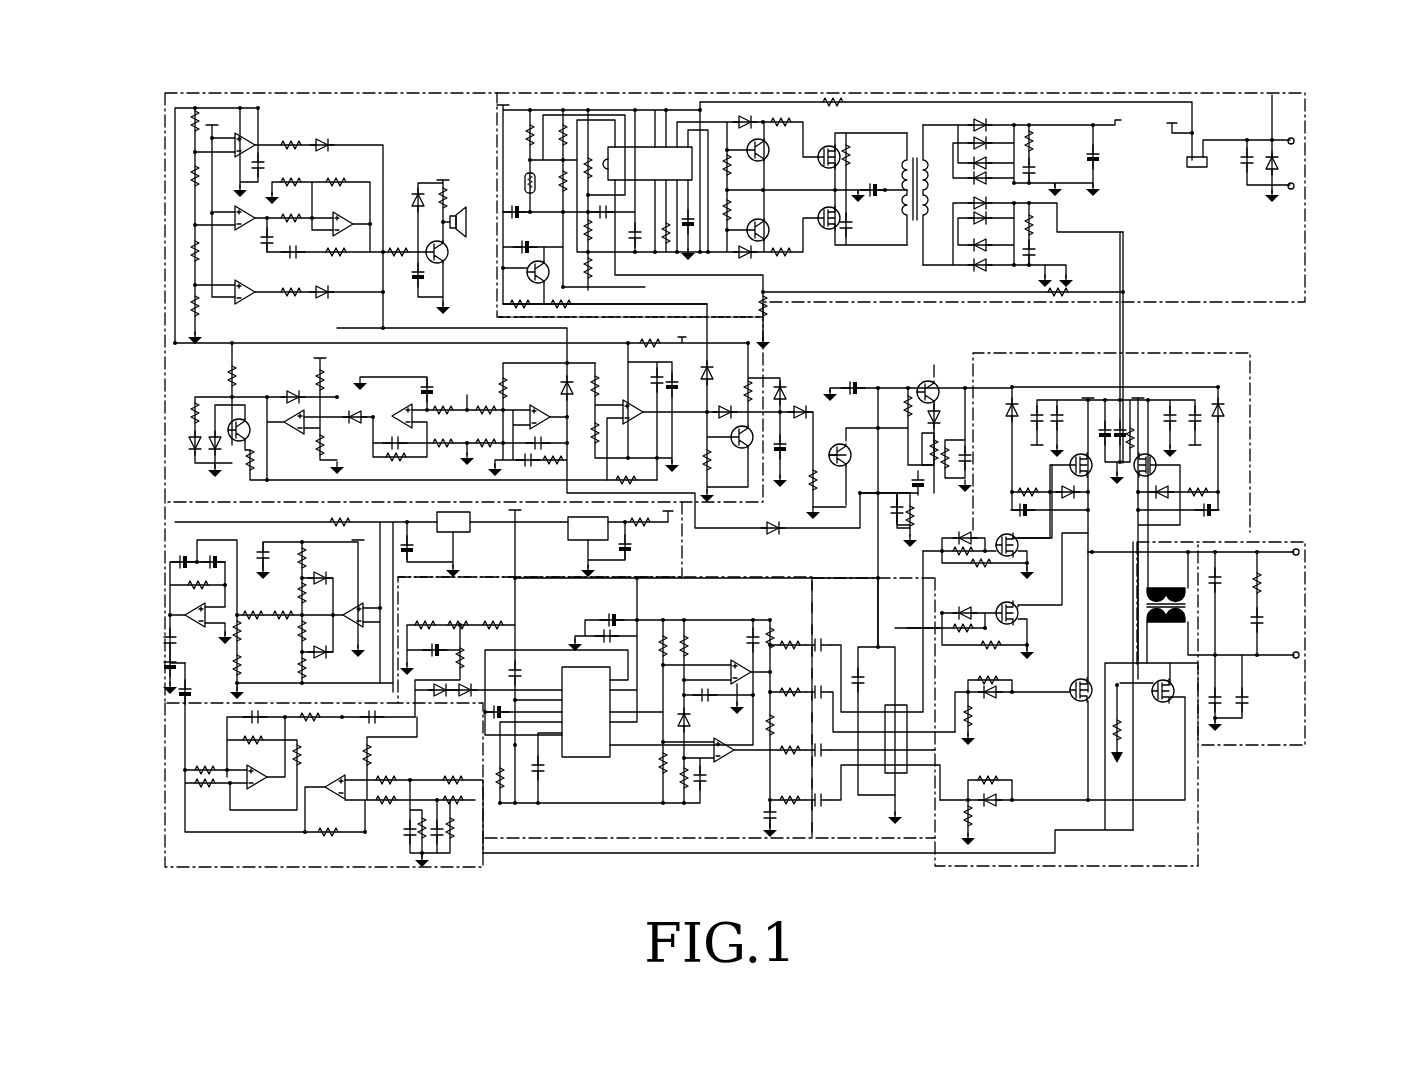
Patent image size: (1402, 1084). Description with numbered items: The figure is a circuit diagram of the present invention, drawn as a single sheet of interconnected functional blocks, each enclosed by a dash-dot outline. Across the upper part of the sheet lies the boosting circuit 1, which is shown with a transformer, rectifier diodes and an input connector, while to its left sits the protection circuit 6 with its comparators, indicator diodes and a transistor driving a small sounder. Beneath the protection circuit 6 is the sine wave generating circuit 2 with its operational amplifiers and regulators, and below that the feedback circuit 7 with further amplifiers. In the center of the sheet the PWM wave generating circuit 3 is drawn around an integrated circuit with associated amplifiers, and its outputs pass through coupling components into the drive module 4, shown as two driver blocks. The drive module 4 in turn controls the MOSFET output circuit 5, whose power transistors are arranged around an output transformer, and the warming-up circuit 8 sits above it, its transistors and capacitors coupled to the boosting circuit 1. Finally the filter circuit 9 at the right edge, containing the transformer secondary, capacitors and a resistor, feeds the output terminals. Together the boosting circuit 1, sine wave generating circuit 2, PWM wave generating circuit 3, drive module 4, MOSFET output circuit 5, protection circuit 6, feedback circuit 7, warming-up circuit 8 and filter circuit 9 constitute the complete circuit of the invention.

The boosting circuit 1 is at (1224, 234).
The sine wave generating circuit 2 is at (178, 540).
The PWM wave generating circuit 3 is at (598, 822).
The drive module 4 is at (878, 820).
The MOSFET output circuit 5 is at (1088, 848).
The protection circuit 6 is at (186, 371).
The feedback circuit 7 is at (158, 811).
The warming-up circuit 8 is at (912, 352).
The filter circuit 9 is at (1256, 544).